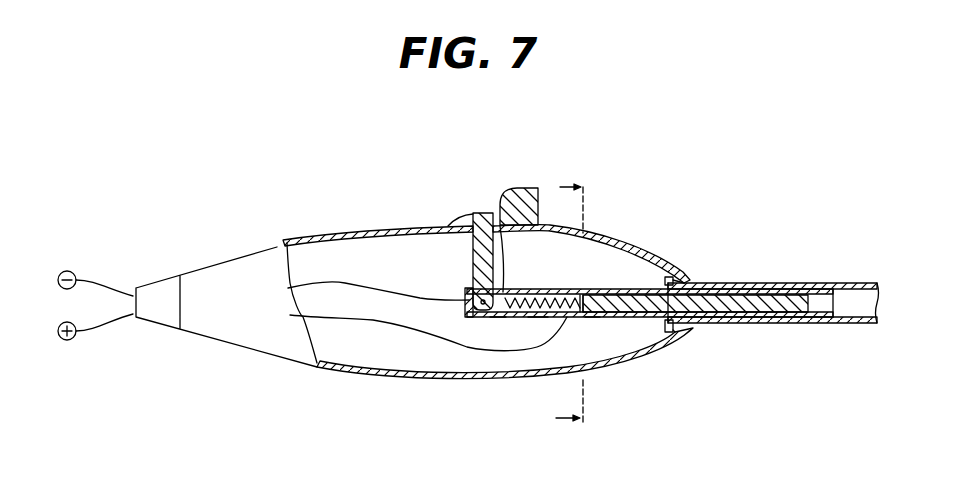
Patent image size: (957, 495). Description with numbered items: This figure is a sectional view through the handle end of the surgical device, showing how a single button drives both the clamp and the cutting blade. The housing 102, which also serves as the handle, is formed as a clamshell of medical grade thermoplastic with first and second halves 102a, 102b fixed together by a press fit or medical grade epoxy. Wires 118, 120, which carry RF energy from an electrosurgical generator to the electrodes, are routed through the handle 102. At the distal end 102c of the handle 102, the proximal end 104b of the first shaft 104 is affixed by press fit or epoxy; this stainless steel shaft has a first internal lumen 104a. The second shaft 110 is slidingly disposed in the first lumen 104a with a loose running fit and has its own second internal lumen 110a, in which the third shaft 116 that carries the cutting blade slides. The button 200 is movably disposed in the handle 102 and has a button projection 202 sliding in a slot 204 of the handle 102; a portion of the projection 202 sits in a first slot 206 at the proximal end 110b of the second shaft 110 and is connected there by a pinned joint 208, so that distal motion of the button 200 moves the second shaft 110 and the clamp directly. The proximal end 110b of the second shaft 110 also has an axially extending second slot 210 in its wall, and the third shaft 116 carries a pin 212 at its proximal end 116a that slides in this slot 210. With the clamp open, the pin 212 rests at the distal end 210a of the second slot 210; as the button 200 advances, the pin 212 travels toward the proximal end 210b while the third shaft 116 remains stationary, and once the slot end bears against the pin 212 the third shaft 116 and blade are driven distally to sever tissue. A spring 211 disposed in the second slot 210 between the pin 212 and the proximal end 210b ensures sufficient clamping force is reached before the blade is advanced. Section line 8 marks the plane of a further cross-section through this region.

The section line 8- 8 is at (573, 306).
The housing 102 is at (411, 383).
The first half of housing 102a is at (218, 277).
The second half of housing 102b is at (300, 239).
The distal end of handle 102c is at (683, 279).
The first shaft 104 is at (862, 323).
The first internal lumen 104a is at (863, 292).
The proximal end of first shaft 104b is at (703, 284).
The second shaft 110 is at (748, 321).
The second internal lumen 110a is at (817, 294).
The proximal end of second shaft 110b is at (469, 317).
The third shaft 116 is at (792, 311).
The proximal end of third shaft 116a is at (593, 299).
The wire 118 is at (100, 277).
The wire 120 is at (107, 322).
The button 200 is at (478, 210).
The button projection 202 is at (472, 272).
The slot in handle 204 is at (546, 226).
The first slot 206 is at (500, 203).
The pinned joint 208 is at (481, 300).
The second slot 210 is at (538, 318).
The distal end of second slot 210a is at (593, 318).
The proximal end of second slot 210b is at (498, 318).
The spring 211 is at (568, 297).
The pin 212 is at (586, 299).